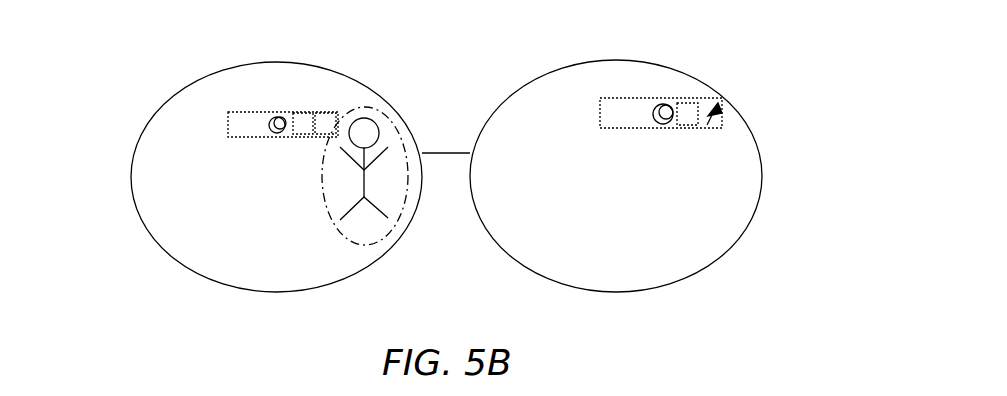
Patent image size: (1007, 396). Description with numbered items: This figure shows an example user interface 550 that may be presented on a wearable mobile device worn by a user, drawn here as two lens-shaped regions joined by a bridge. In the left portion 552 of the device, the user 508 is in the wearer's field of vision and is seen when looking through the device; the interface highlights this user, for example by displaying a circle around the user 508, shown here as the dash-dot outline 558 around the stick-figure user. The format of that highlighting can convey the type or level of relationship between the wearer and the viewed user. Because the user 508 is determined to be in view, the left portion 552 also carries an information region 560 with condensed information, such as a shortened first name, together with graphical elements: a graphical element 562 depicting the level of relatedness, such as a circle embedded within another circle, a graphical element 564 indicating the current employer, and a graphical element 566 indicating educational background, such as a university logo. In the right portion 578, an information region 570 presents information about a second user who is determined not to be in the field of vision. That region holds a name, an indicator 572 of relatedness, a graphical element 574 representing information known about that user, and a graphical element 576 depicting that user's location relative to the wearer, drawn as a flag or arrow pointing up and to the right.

The user interface 550 is at (745, 318).
The left portion 552 is at (235, 177).
The highlighted region around user avatar 558 is at (402, 208).
The user 508 is at (416, 135).
The information region 560 is at (205, 105).
The graphical element 562 is at (220, 79).
The graphical element 564 is at (277, 72).
The graphical element 566 is at (356, 79).
The information region 570 is at (622, 75).
The second status indicator 572 is at (689, 62).
The graphical element 574 is at (742, 73).
The graphical element 576 is at (776, 91).
The right portion 578 is at (658, 176).